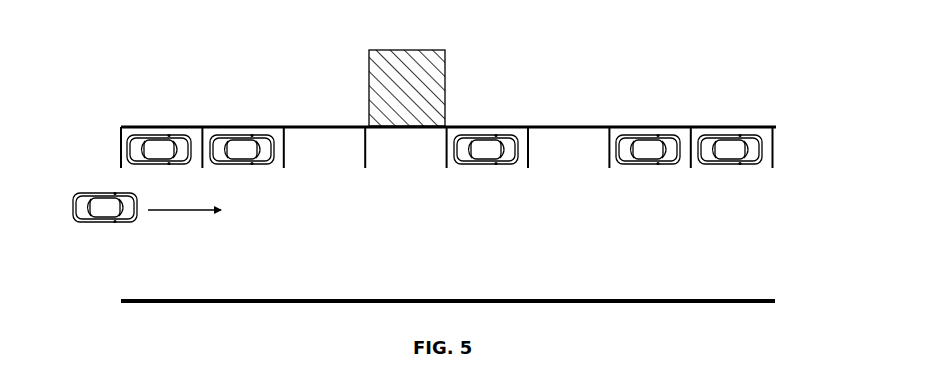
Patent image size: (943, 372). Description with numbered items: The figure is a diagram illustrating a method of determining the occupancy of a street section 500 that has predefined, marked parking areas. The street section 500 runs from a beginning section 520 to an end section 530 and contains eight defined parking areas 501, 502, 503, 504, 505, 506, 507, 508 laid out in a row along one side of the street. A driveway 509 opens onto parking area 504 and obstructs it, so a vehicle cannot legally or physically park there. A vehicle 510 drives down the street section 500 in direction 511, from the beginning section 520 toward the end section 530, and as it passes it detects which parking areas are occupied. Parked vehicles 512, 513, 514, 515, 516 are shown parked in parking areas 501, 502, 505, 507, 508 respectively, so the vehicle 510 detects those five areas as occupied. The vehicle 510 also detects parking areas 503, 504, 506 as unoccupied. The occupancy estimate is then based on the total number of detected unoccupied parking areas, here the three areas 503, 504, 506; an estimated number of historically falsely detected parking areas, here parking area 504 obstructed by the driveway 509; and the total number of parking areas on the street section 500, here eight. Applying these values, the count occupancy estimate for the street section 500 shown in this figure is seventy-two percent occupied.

The street section 500 is at (101, 61).
The defined parking area 501 is at (161, 137).
The defined parking area 502 is at (259, 137).
The defined parking area 503 is at (338, 137).
The defined parking area 504 is at (379, 146).
The defined parking area 505 is at (504, 137).
The defined parking area 506 is at (583, 137).
The defined parking area 507 is at (665, 137).
The defined parking area 508 is at (748, 137).
The driveway 509 is at (426, 43).
The vehicle 510 is at (99, 199).
The direction 511 is at (184, 220).
The parked vehicle 512 is at (157, 171).
The parked vehicle 513 is at (242, 171).
The parked vehicle 514 is at (483, 171).
The parked vehicle 515 is at (645, 171).
The parked vehicle 516 is at (733, 171).
The beginning section 520 is at (235, 262).
The end section 530 is at (646, 262).